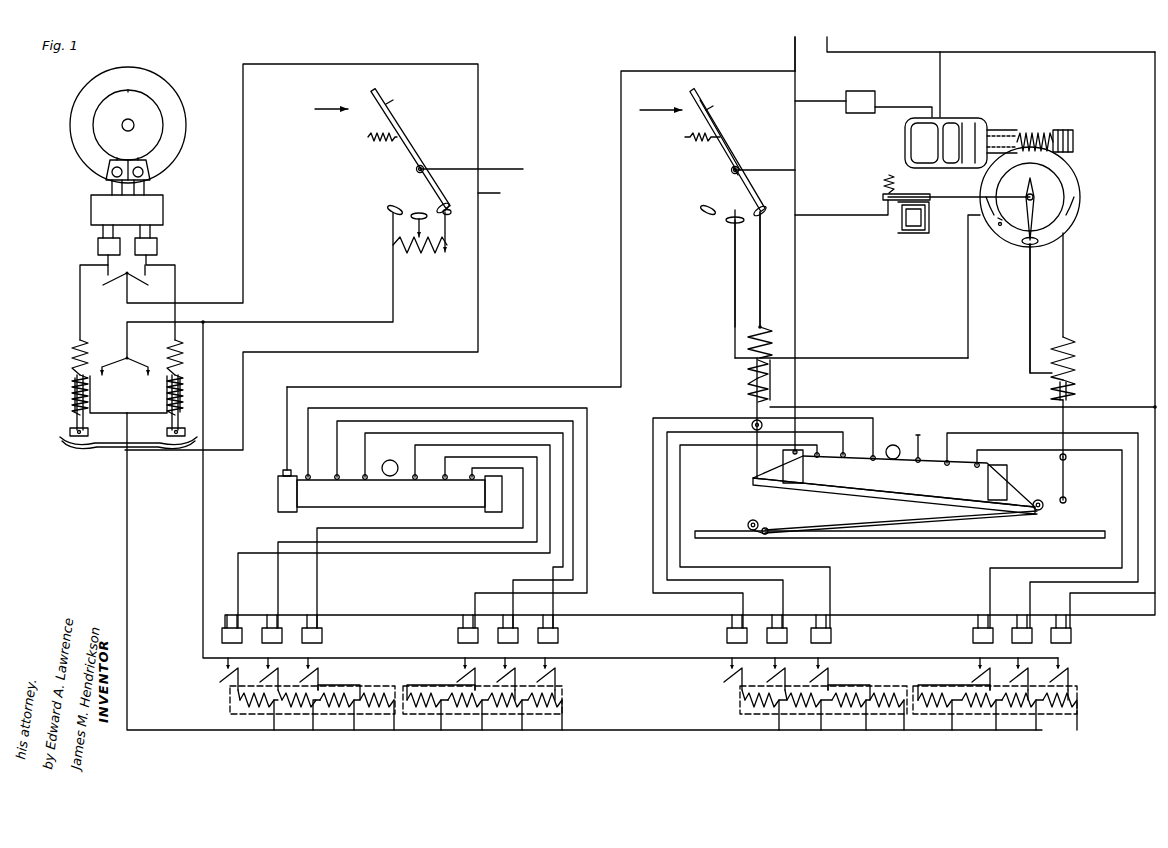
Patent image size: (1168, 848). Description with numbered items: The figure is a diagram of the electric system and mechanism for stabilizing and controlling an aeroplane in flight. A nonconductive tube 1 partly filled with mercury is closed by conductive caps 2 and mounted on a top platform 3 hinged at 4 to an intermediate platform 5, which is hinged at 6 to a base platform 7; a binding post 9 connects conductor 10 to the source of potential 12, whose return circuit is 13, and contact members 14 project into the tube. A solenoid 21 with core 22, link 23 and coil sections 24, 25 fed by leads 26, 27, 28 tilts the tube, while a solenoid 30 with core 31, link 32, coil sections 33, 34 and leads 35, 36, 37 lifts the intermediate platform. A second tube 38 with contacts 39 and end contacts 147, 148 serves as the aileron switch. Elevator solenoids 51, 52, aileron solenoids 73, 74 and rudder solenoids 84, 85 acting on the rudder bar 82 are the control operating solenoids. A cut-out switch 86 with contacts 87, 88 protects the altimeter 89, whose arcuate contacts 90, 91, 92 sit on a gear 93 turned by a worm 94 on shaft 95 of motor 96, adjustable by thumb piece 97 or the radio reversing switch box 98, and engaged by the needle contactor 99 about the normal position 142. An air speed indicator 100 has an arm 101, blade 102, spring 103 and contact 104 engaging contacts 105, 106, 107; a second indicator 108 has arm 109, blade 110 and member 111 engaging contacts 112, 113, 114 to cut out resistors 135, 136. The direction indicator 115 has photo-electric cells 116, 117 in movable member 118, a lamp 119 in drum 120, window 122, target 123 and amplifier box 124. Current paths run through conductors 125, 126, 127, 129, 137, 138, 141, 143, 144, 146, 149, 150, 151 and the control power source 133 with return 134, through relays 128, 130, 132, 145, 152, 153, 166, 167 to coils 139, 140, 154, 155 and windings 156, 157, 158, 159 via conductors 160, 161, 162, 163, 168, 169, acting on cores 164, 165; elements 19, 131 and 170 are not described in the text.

The tube 1 is at (900, 470).
The caps 2 is at (786, 480).
The top platform 3 is at (806, 488).
The hinge 4 is at (1040, 500).
The intermediate platform 5 is at (845, 520).
The hinge 6 is at (750, 520).
The base platform 7 is at (910, 536).
The binding post 9 is at (783, 455).
The electric conductor 10 is at (797, 136).
The source of potential 12 is at (793, 40).
The return circuit 13 is at (830, 37).
The contact members 14 is at (832, 445).
The ball 19 is at (890, 445).
The solenoid 21 is at (750, 365).
The movable core 22 is at (750, 392).
The link 23 is at (752, 462).
The upper coil section 24 is at (775, 352).
The lower coil section 25 is at (770, 378).
The lead 26 is at (762, 312).
The lead 27 is at (733, 300).
The lead 28 is at (845, 405).
The solenoid 30 is at (1078, 377).
The movable core 31 is at (1068, 427).
The link 32 is at (1068, 487).
The coil section 33 is at (1078, 352).
The coil section 34 is at (1078, 395).
The lead 35 is at (1065, 320).
The lead 36 is at (1030, 335).
The lead 37 is at (1150, 402).
The second tube 38 is at (385, 502).
The contact members 39 is at (442, 474).
The solenoid 51 is at (740, 703).
The solenoid 52 is at (1077, 704).
The solenoid 73 is at (230, 703).
The solenoid 74 is at (562, 704).
The rudder bar 82 is at (63, 446).
The solenoid 84 is at (75, 378).
The solenoid 85 is at (180, 390).
The automatic cut-out switch 86 is at (900, 222).
The contact 87 is at (884, 190).
The contact 88 is at (883, 200).
The altimeter 89 is at (1080, 192).
The arcuate contact 90 is at (992, 228).
The arcuate contact 91 is at (1034, 246).
The arcuate contact 92 is at (1072, 218).
The gear 93 is at (1058, 172).
The worm 94 is at (1040, 132).
The shaft 95 is at (1002, 130).
The motor 96 is at (910, 146).
The thumb piece 97 is at (1073, 140).
The box 98 is at (867, 84).
The needle contactor 99 is at (1034, 202).
The air speed indicator 100 is at (730, 160).
The arm 101 is at (722, 133).
The blade portion 102 is at (705, 100).
The spring 103 is at (697, 140).
The contact 104 is at (760, 205).
The arcuate contact 105 is at (775, 212).
The arcuate contact 106 is at (733, 224).
The arcuate contact 107 is at (708, 218).
The second air speed indicator 108 is at (400, 147).
The arm 109 is at (423, 165).
The blade 110 is at (390, 105).
The contacting member 111 is at (446, 203).
The arcuate contact 112 is at (455, 212).
The arcuate contact 113 is at (420, 212).
The arcuate contact 114 is at (388, 207).
The direction indicator 115 is at (70, 128).
The photo-electric cell 116 is at (108, 178).
The photo-electric cell 117 is at (148, 176).
The movable member 118 is at (170, 128).
The lamp 119 is at (132, 122).
The rotary drum portion 120 is at (131, 90).
The window 122 is at (138, 165).
The target 123 is at (117, 165).
The box 124 is at (127, 216).
The conductor 125 is at (785, 168).
The conductor 126 is at (880, 52).
The conductor 127 is at (988, 575).
The relay 128 is at (973, 636).
The conductor 129 is at (1030, 588).
The relay 130 is at (1018, 643).
The conductor 131 is at (1070, 598).
The relay 132 is at (1071, 640).
The control power circuit source 133 is at (512, 171).
The return side of supply 134 is at (500, 193).
The resistor 135 is at (438, 250).
The resistor 136 is at (396, 250).
The conductor 137 is at (127, 330).
The conductor 138 is at (203, 592).
The coil 139 is at (954, 715).
The coil 140 is at (1016, 715).
The conductor 141 is at (243, 375).
The space 142 is at (1003, 238).
The conductor 143 is at (849, 214).
The conductor 144 is at (972, 194).
The intermediary control relays 145 is at (810, 635).
The conductor 146 is at (968, 342).
The contact 147 is at (305, 482).
The contact 148 is at (470, 480).
The conductor 149 is at (742, 72).
The conductor 150 is at (474, 403).
The conductor 151 is at (523, 520).
The relay 152 is at (322, 637).
The relay 153 is at (458, 637).
The solenoid coil section 154 is at (350, 715).
The solenoid coil section 155 is at (439, 715).
The winding 156 is at (72, 403).
The winding 157 is at (170, 392).
The winding 158 is at (72, 353).
The winding 159 is at (172, 345).
The conductor 160 is at (100, 380).
The conductor 161 is at (150, 380).
The conductor 162 is at (108, 395).
The conductor 163 is at (147, 395).
The core 164 is at (70, 428).
The core 165 is at (167, 430).
The relay 166 is at (98, 246).
The relay 167 is at (157, 246).
The conductor 168 is at (127, 297).
The conductor 169 is at (80, 295).
The conductor 170 is at (175, 290).